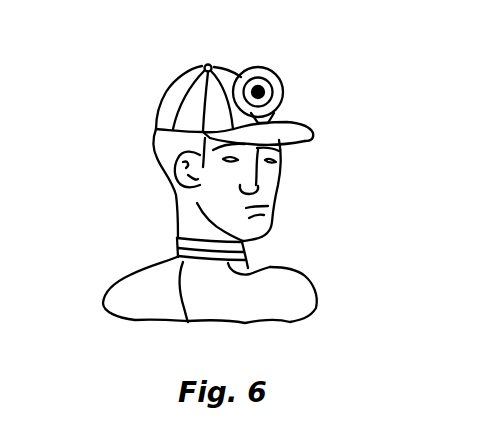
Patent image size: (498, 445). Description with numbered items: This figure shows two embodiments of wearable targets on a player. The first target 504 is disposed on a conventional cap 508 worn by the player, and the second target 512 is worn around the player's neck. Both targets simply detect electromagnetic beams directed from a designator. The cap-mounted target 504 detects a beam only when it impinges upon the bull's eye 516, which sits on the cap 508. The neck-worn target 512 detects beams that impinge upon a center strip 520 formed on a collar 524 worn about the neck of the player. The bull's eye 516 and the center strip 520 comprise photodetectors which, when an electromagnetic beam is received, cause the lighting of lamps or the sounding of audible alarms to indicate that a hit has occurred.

The wearable target 504 is at (272, 68).
The cap 508 is at (168, 92).
The wearable target 512 is at (143, 240).
The bull's eye 516 is at (260, 92).
The center strip 520 is at (185, 316).
The collar 524 is at (257, 273).